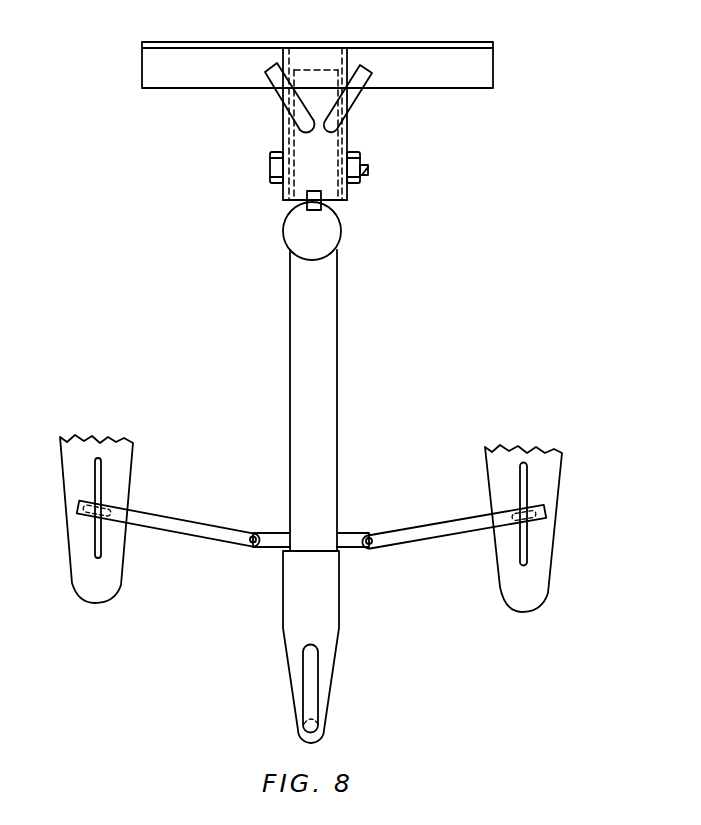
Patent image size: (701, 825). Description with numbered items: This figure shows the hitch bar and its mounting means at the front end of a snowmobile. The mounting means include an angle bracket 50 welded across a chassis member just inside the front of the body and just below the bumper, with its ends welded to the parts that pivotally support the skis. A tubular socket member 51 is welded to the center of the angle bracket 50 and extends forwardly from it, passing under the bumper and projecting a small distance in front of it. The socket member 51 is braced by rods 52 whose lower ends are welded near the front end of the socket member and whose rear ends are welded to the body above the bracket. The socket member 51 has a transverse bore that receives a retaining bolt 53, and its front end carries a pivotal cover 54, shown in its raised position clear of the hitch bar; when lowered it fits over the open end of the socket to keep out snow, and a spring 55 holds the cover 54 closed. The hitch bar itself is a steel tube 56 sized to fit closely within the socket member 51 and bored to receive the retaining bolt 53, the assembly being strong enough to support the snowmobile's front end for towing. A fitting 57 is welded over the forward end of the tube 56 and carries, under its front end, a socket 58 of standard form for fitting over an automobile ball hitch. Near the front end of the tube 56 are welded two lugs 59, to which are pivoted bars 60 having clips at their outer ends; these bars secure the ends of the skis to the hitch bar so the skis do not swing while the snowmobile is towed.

The angle bracket 50 is at (403, 62).
The tubular socket member 51 is at (348, 125).
The rods 52 is at (273, 67).
The retaining bolt 53 is at (364, 170).
The pivotal cover 54 is at (330, 236).
The spring 55 is at (322, 204).
The steel tube 56 is at (328, 375).
The fitting 57 is at (322, 677).
The socket 58 is at (310, 728).
The lugs 59 is at (273, 538).
The bars 60 is at (202, 532).